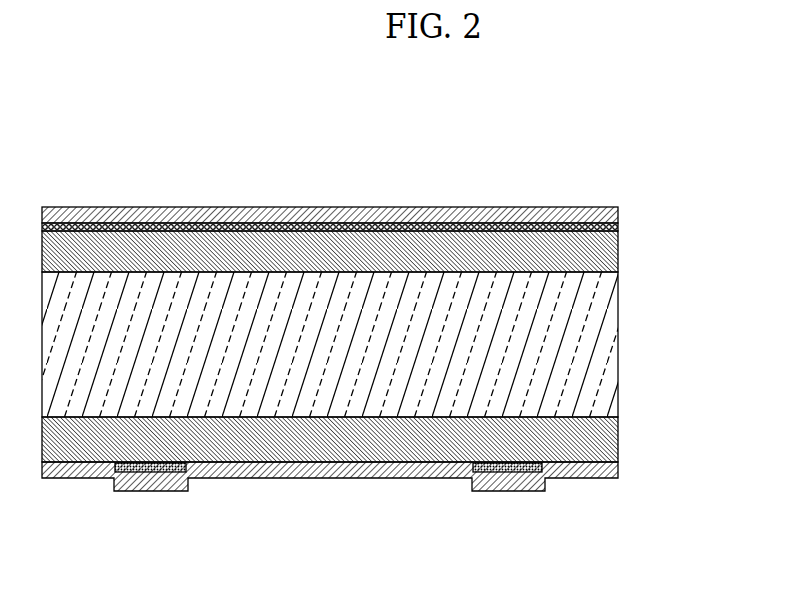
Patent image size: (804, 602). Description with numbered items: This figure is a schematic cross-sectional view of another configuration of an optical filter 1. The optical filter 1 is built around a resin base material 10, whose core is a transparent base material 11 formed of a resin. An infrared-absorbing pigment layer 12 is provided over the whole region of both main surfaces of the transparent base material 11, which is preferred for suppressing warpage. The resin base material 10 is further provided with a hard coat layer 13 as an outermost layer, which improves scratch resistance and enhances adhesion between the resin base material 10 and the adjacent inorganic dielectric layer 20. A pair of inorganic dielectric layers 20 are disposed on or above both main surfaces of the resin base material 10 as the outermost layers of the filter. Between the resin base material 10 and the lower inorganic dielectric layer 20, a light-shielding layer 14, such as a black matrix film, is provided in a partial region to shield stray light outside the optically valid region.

The optical filter 1 is at (60, 177).
The resin base material 10 is at (414, 342).
The transparent base material 11 is at (379, 344).
The infrared-absorbing pigment layer 12 is at (616, 260).
The hard coat layer 13 is at (616, 227).
The light-shielding layer 14 is at (540, 467).
The inorganic dielectric layer 20 is at (615, 210).